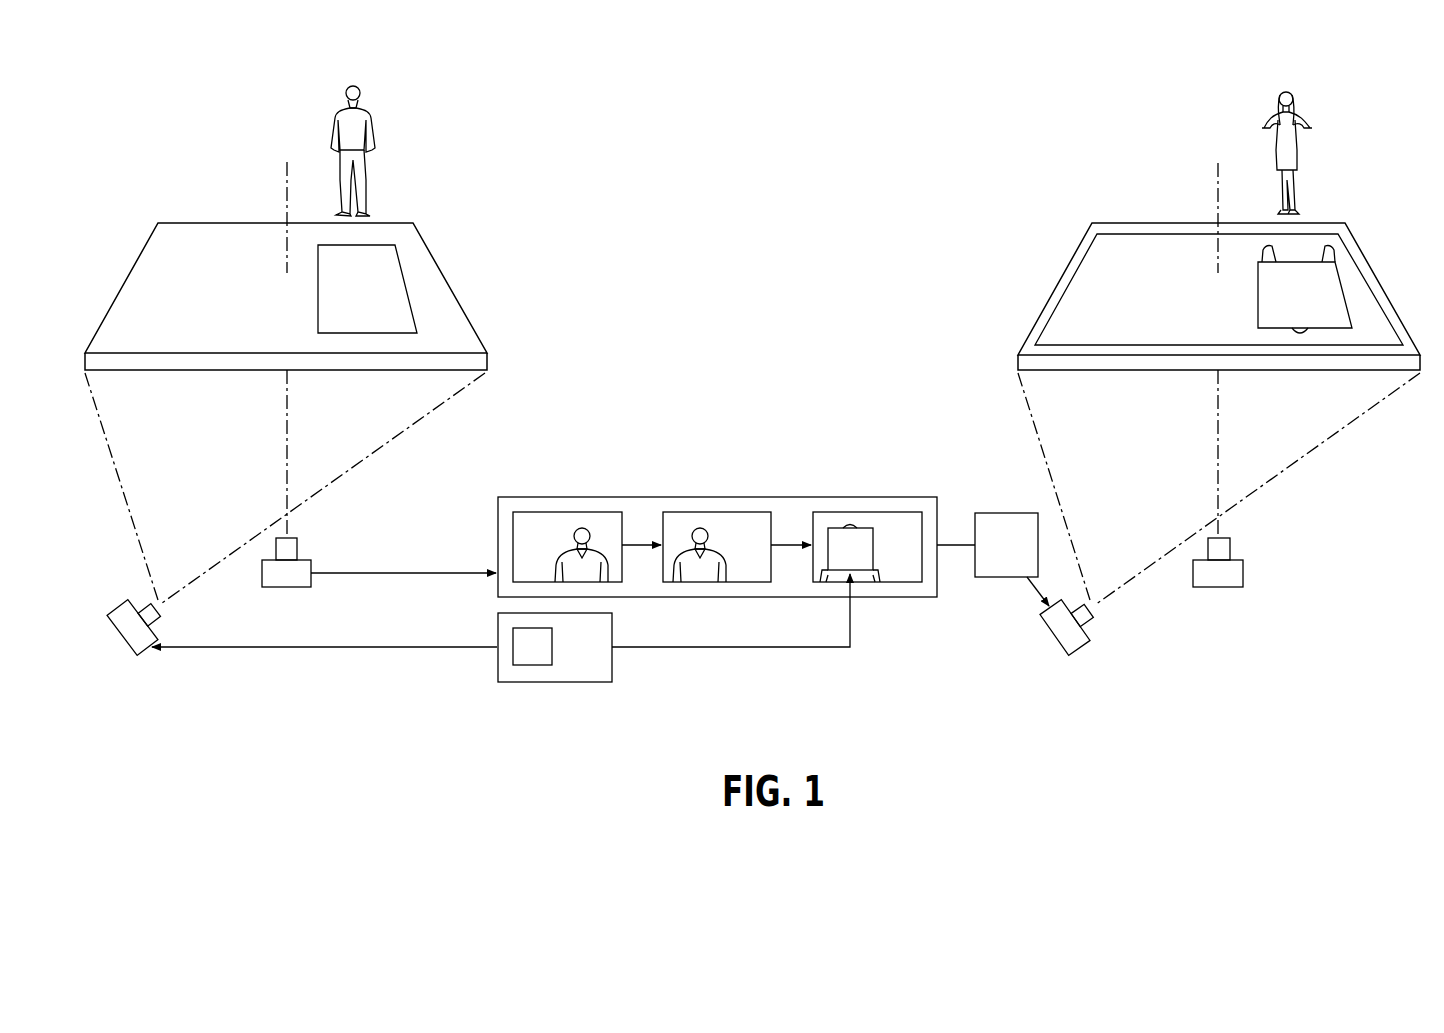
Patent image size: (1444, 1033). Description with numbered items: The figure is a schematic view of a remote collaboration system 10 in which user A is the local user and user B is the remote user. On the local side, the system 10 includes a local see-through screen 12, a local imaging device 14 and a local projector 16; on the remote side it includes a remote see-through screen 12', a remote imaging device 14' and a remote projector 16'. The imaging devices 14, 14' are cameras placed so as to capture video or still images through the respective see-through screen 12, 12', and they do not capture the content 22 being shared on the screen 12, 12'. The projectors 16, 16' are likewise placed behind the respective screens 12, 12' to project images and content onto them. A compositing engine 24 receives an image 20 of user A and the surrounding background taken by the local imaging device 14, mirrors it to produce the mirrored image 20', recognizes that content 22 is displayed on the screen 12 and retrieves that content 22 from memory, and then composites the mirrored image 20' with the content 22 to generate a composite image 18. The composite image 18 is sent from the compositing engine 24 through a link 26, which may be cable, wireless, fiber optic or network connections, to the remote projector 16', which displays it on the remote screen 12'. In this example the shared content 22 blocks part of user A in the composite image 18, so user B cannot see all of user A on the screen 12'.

The remote collaboration system 10 is at (887, 182).
The local screen 12 is at (327, 382).
The remote screen 12' is at (1187, 384).
The local imaging device 14 is at (379, 578).
The remote imaging device 14' is at (1269, 564).
The local projector 16 is at (302, 665).
The remote projector 16' is at (1087, 661).
The composite image 18 is at (867, 512).
The image 20 is at (567, 498).
The mirrored image 20' is at (717, 498).
The content 22 is at (407, 287).
The compositing engine 24 is at (895, 597).
The link 26 is at (1005, 513).
The user A is at (370, 168).
The user B is at (1300, 155).